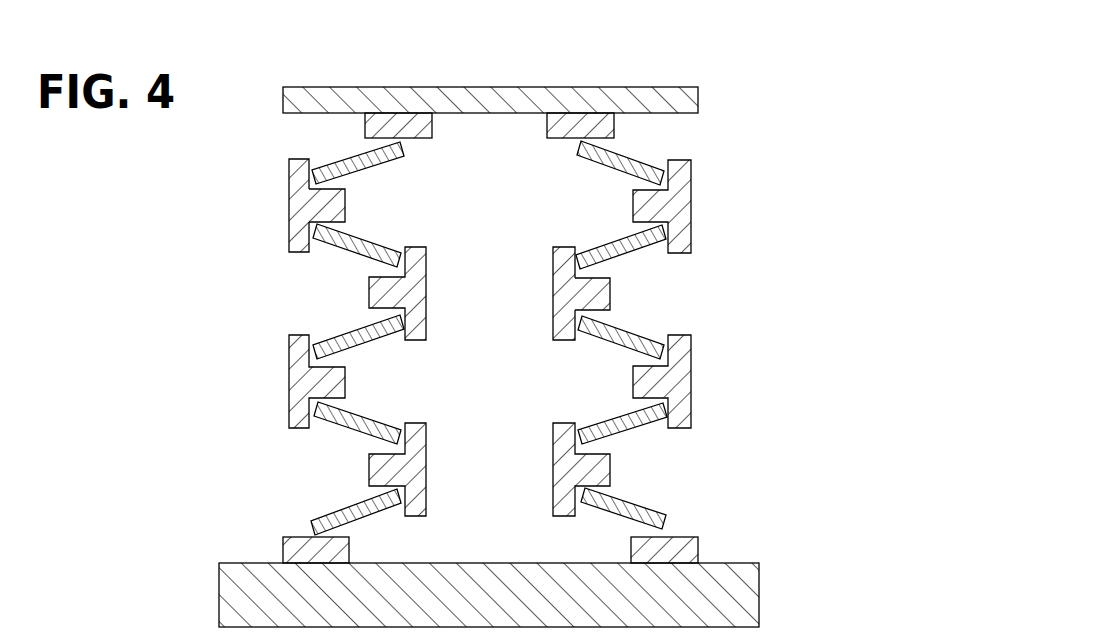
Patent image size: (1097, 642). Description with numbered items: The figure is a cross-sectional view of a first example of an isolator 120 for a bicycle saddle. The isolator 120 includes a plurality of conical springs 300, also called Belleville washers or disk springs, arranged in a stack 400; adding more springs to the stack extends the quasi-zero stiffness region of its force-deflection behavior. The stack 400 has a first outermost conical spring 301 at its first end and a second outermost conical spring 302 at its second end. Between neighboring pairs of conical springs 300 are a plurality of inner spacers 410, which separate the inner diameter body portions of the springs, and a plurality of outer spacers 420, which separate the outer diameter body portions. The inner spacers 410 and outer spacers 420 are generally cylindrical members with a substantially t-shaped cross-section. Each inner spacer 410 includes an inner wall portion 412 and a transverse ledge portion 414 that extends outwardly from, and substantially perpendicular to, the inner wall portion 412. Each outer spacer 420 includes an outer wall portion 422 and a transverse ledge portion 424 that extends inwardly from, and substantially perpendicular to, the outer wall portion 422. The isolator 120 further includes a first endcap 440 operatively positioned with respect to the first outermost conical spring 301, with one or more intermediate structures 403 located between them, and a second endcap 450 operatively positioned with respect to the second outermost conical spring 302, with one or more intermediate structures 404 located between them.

The isolator 120 is at (768, 68).
The first endcap 440 is at (677, 92).
The second endcap 450 is at (745, 589).
The stack 400 is at (778, 221).
The intermediate structure 403 is at (433, 124).
The intermediate structure 404 is at (283, 537).
The outer spacer 420 is at (288, 156).
The outer wall portion 422 is at (292, 228).
The transverse ledge portion 424 is at (335, 206).
The inner spacer 410 is at (431, 345).
The inner wall portion 412 is at (553, 328).
The transverse ledge portion 414 is at (607, 292).
The conical spring 300 is at (658, 168).
The first outermost conical spring 301 is at (620, 152).
The second outermost conical spring 302 is at (663, 530).